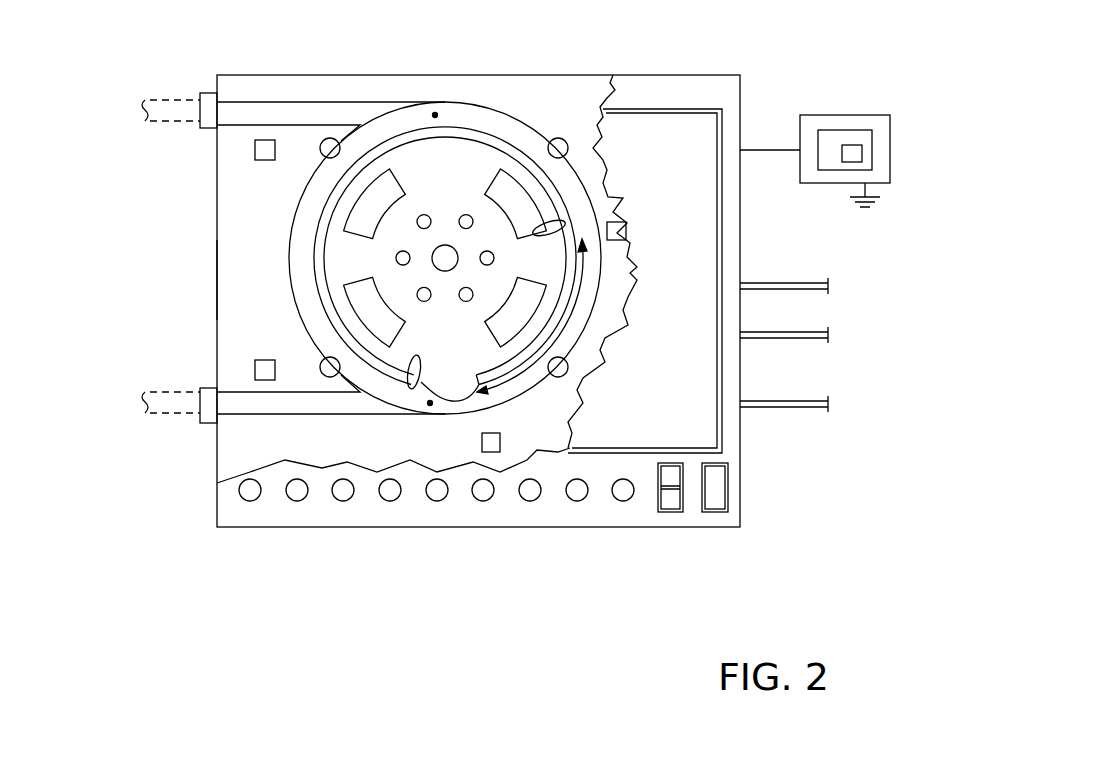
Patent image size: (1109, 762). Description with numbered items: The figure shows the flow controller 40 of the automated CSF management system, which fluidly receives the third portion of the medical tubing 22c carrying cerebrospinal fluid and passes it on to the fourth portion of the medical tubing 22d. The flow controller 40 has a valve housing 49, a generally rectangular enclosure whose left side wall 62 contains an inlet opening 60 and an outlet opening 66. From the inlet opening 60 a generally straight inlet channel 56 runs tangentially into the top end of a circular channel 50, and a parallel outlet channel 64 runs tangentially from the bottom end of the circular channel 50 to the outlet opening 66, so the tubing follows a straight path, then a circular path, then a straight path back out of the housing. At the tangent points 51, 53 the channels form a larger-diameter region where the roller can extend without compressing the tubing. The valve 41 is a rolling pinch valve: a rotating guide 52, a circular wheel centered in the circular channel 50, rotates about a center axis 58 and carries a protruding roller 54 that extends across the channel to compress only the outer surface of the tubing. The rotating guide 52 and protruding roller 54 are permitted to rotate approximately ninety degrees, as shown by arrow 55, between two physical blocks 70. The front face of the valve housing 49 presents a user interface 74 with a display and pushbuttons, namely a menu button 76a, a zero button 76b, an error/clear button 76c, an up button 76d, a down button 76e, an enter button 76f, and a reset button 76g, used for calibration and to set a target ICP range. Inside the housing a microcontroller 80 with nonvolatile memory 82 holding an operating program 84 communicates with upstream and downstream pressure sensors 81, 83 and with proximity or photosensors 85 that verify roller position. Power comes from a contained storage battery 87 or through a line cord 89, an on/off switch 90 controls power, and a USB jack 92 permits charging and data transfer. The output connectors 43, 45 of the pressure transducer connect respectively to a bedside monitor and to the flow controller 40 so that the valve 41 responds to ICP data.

The flow controller 40 is at (96, 130).
The valve 41 is at (287, 195).
The output connector 43 is at (795, 340).
The output connector 45 is at (795, 282).
The valve housing 49 is at (216, 248).
The circular channel 50 is at (503, 127).
The tangent point 51 is at (436, 113).
The rotating guide 52 is at (452, 170).
The tangent point 53 is at (430, 405).
The protruding roller 54 is at (432, 394).
The arrow 55 is at (585, 300).
The inlet channel 56 is at (300, 104).
The center axis 58 is at (445, 255).
The inlet opening 60 is at (209, 106).
The left side wall 62 is at (216, 300).
The outlet channel 64 is at (255, 406).
The outlet opening 66 is at (208, 421).
The physical blocks 70 is at (555, 222).
The user interface 74 is at (692, 127).
The menu button 76a is at (250, 502).
The zero button 76b is at (297, 502).
The error/clear button 76c is at (343, 502).
The up button 76d is at (390, 502).
The down button 76e is at (437, 502).
The enter button 76f is at (483, 502).
The reset button 76g is at (530, 502).
The microcontroller 80 is at (858, 115).
The upstream pressure sensor 81 is at (255, 150).
The nonvolatile memory 82 is at (872, 137).
The downstream pressure sensor 83 is at (255, 369).
The operating program 84 is at (858, 153).
The proximity or photosensors 85 is at (625, 222).
The contained storage battery 87 is at (877, 203).
The line cord 89 is at (810, 410).
The on/off switch 90 is at (683, 500).
The USB jack 92 is at (728, 490).
The third portion of the medical tubing 22c is at (170, 100).
The fourth portion of the medical tubing 22d is at (173, 412).